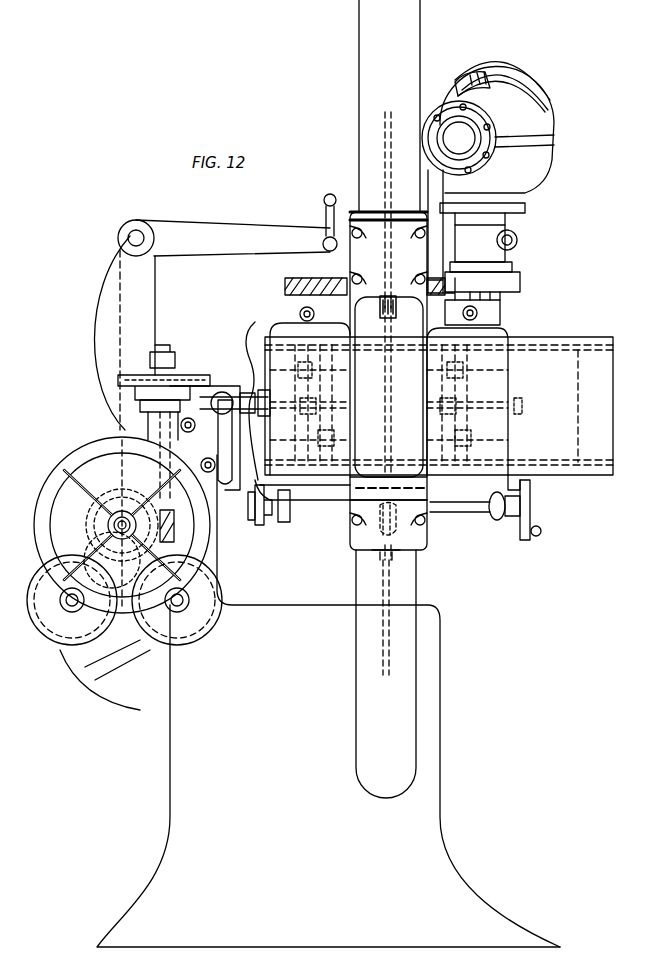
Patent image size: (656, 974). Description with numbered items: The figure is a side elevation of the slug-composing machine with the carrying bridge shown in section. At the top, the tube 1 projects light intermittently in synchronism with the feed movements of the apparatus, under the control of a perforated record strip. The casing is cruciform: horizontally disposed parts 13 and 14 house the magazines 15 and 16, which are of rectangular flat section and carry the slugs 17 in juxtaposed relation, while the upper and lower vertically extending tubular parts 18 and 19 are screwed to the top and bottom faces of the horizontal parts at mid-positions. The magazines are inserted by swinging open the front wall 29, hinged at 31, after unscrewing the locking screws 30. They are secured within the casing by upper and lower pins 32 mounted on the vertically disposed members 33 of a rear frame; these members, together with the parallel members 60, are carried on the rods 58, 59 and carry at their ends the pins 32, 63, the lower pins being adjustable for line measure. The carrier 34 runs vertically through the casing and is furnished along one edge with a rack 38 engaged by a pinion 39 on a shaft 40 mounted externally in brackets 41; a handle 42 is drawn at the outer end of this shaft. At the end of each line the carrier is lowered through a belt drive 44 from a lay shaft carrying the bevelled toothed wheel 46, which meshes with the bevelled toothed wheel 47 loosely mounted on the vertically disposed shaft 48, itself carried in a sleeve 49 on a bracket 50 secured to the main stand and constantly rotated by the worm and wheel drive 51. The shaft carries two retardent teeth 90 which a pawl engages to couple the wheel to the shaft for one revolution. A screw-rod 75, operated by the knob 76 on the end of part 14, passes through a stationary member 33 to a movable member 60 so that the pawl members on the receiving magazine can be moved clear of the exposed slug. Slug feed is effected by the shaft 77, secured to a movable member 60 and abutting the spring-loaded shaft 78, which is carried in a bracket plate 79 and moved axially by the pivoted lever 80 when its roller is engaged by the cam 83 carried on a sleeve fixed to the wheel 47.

The tube 1 is at (535, 133).
The horizontally disposed part 13 is at (284, 326).
The horizontally disposed part 14 is at (504, 336).
The magazine 15 is at (256, 335).
The magazine 16 is at (567, 340).
The slug 17 is at (392, 327).
The upper vertically extending tubular part 18 is at (362, 52).
The lower vertically extending tubular part 19 is at (356, 672).
The front wall 29 is at (367, 411).
The locking screw 30 is at (384, 318).
The hinge 31 is at (348, 502).
The pin 32 is at (389, 424).
The vertically disposed member 33 is at (318, 420).
The carrier 34 is at (389, 150).
The rack 38 is at (386, 619).
The pinion 39 is at (391, 561).
The shaft 40 is at (452, 512).
The bracket 41 is at (495, 518).
The handle 42 is at (531, 510).
The belt drive 44 is at (246, 495).
The bevelled toothed wheel 46 is at (214, 385).
The bevelled toothed wheel 47 is at (122, 382).
The vertically disposed shaft 48 is at (166, 352).
The sleeve 49 is at (146, 424).
The bracket 50 is at (256, 505).
The worm and wheel drive 51 is at (116, 492).
The rod 58 is at (411, 387).
The rod 59 is at (407, 428).
The parallel member 60 is at (330, 392).
The pin 63 is at (316, 345).
The screw-rod 75 is at (488, 420).
The knob 76 is at (523, 412).
The shaft 77 is at (286, 389).
The shaft 78 is at (250, 394).
The bracket plate 79 is at (205, 438).
The pivoted lever 80 is at (188, 376).
The cam 83 is at (140, 400).
The retardent teeth 90 is at (152, 368).